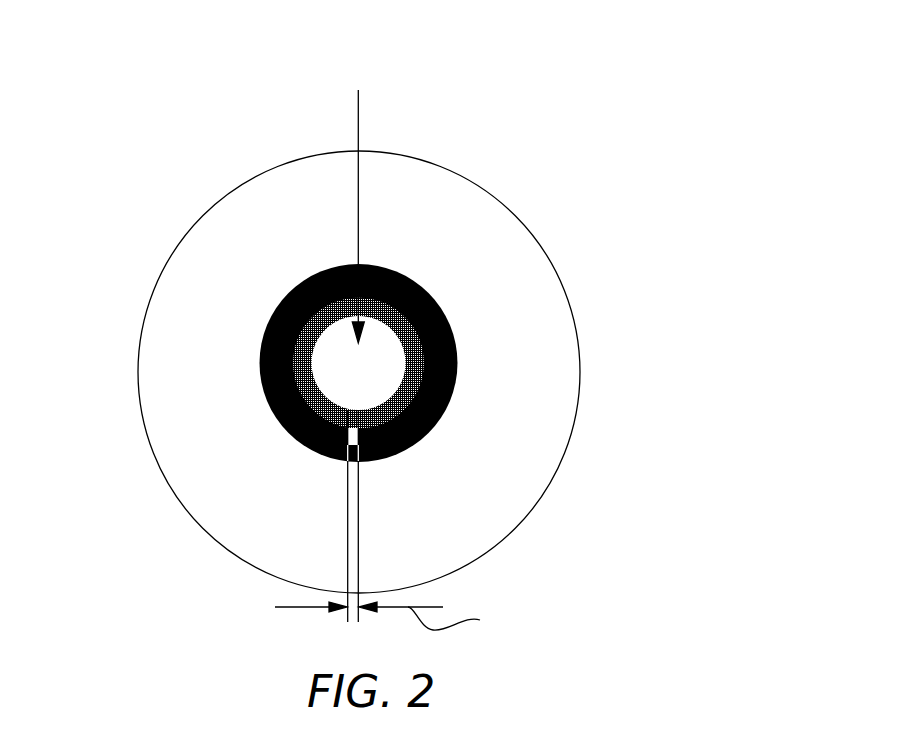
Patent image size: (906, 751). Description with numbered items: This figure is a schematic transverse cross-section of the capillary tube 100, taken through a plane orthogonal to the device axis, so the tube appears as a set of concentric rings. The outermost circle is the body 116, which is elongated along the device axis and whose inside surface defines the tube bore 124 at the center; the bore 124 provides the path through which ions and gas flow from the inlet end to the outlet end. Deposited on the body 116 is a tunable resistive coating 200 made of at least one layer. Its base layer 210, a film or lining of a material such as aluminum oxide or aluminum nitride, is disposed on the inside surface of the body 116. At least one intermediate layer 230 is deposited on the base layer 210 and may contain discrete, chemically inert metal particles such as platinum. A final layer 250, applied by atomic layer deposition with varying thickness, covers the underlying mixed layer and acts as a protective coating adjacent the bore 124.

The capillary tube 100 is at (104, 196).
The body 116 is at (423, 205).
The tube bore 124 is at (358, 342).
The tunable resistive coating 200 is at (276, 446).
The base layer 210 is at (437, 302).
The intermediate layer 230 is at (422, 365).
The final layer 250 is at (402, 385).